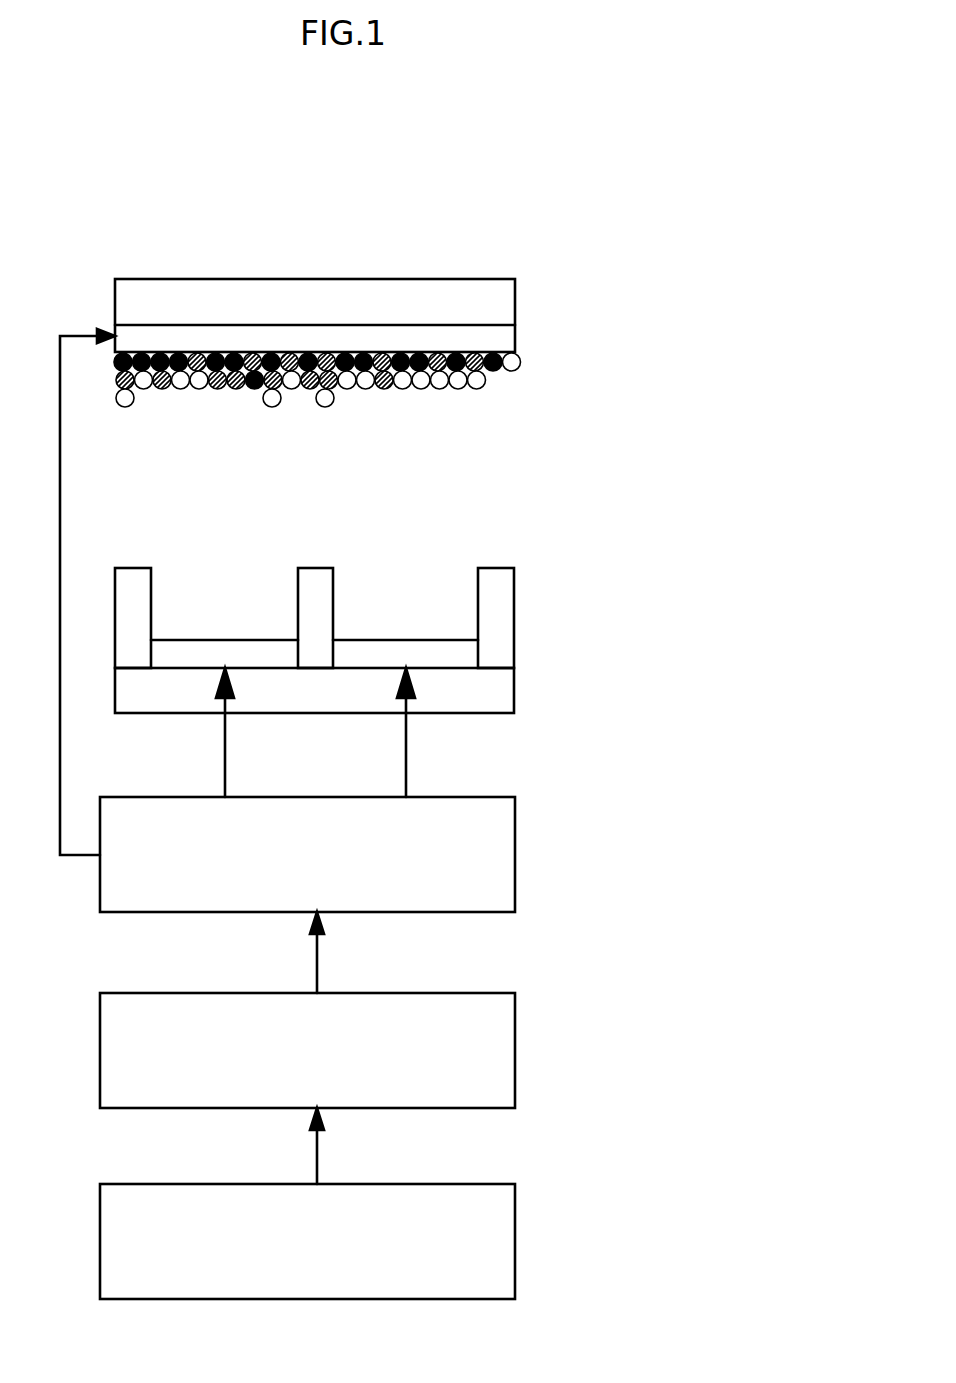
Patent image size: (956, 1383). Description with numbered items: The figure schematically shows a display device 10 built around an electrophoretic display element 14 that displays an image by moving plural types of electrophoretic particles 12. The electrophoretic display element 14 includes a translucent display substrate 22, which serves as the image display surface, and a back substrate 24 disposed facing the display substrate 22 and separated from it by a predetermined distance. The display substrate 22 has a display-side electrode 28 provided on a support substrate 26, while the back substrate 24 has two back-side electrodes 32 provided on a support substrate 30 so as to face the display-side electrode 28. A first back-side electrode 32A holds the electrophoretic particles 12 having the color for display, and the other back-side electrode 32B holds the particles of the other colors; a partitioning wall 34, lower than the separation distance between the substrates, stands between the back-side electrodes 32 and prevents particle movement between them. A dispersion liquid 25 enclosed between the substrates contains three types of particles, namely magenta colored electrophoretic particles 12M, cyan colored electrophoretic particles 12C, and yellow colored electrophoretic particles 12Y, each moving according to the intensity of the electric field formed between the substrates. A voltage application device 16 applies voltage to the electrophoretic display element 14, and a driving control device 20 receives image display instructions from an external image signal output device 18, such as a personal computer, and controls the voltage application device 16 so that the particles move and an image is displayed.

The display device 10 is at (483, 158).
The electrophoretic particles 12 is at (317, 441).
The yellow colored electrophoretic particles 12Y is at (325, 407).
The cyan colored electrophoretic particles 12C is at (385, 391).
The magenta colored electrophoretic particles 12M is at (474, 434).
The electrophoretic display element 14 is at (522, 520).
The voltage application device 16 is at (516, 850).
The external image signal output device 18 is at (516, 1240).
The driving control device 20 is at (516, 1048).
The display substrate 22 is at (409, 319).
The back substrate 24 is at (408, 613).
The dispersion liquid 25 is at (218, 497).
The support substrate 26 is at (516, 298).
The display-side electrode 28 is at (516, 338).
The support substrate 30 is at (516, 691).
The back-side electrodes 32 is at (369, 592).
The first back-side electrode 32A is at (206, 640).
The back-side electrode 32B is at (396, 640).
The partitioning wall 34 is at (296, 590).